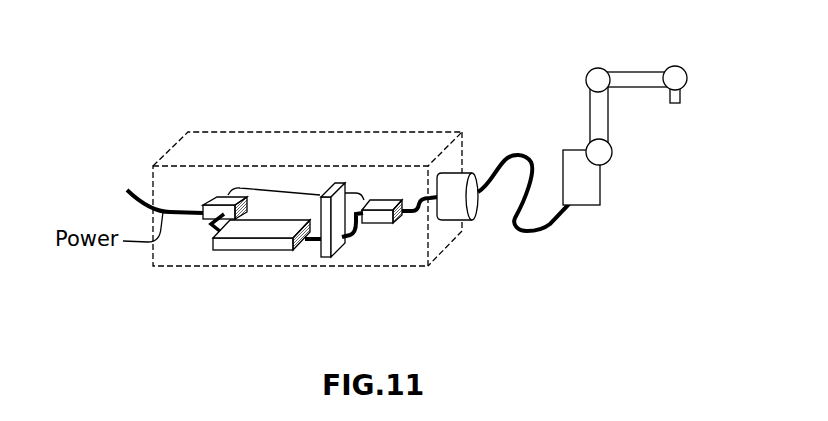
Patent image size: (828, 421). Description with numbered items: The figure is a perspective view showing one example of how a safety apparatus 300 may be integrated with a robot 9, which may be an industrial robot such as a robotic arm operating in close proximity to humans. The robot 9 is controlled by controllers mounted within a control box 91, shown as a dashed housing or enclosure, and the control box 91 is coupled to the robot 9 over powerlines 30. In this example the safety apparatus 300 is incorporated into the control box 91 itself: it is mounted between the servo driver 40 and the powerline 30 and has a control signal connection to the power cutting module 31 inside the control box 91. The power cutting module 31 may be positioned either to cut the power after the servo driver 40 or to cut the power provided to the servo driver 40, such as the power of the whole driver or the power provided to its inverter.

The robot 9 is at (582, 114).
The powerlines 30 is at (312, 240).
The power cutting module 31 is at (215, 198).
The servo driver 40 is at (243, 250).
The control box 91 is at (248, 143).
The safety apparatus 300 is at (333, 186).